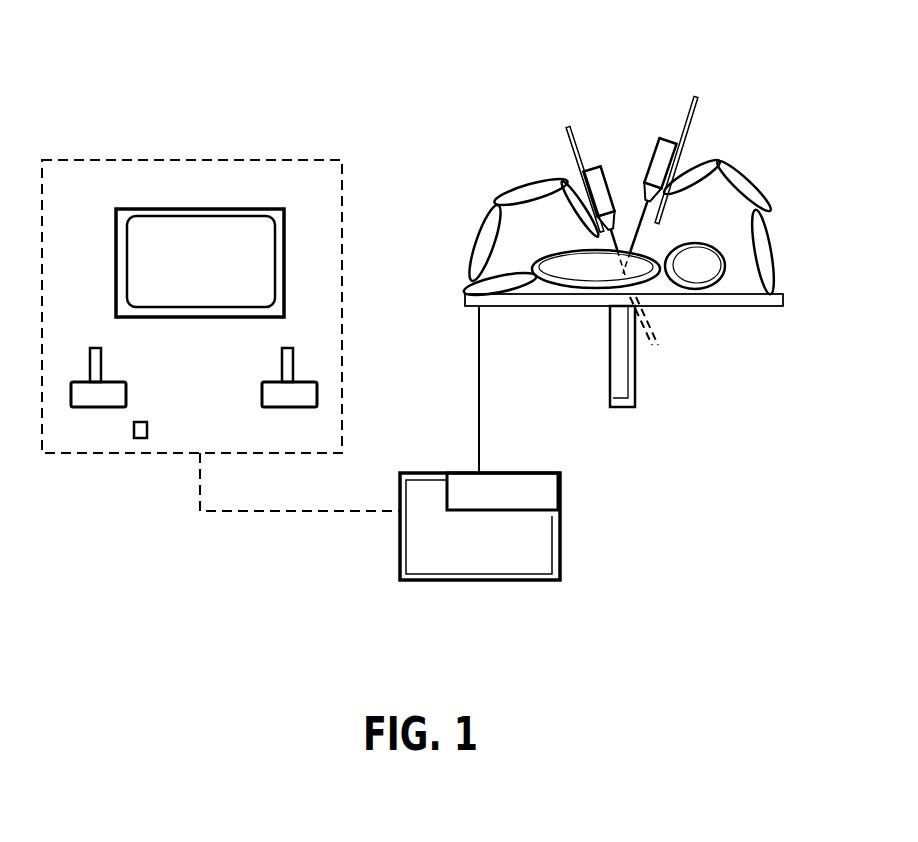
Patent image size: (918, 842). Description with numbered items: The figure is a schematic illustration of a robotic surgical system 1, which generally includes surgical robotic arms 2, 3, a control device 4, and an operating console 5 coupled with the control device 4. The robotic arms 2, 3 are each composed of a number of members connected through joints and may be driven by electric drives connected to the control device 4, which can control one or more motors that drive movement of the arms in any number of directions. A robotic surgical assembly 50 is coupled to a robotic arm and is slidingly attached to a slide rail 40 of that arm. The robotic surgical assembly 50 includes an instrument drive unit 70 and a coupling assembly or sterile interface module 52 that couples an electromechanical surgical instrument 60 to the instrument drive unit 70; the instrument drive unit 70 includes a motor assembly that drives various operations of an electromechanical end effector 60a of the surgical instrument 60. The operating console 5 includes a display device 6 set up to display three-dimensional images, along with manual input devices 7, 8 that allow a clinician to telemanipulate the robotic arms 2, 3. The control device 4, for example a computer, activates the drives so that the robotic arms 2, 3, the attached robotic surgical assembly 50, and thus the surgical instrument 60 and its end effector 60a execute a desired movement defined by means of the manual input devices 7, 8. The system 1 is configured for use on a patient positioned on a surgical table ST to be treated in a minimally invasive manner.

The robotic surgical system 1 is at (694, 505).
The surgical robotic arm 2 is at (497, 203).
The surgical robotic arm 3 is at (769, 171).
The control device 4 is at (469, 551).
The operating console 5 is at (129, 124).
The display device 6 is at (197, 273).
The manual input device 7 is at (82, 397).
The manual input device 8 is at (288, 397).
The slide rail 40 is at (564, 130).
The robotic surgical assembly 50 is at (598, 162).
The sterile interface module 52 is at (645, 182).
The electromechanical surgical instrument 60 is at (593, 240).
The electromechanical end effector 60a is at (660, 336).
The instrument drive unit 70 is at (588, 172).
The surgical table ST is at (556, 297).